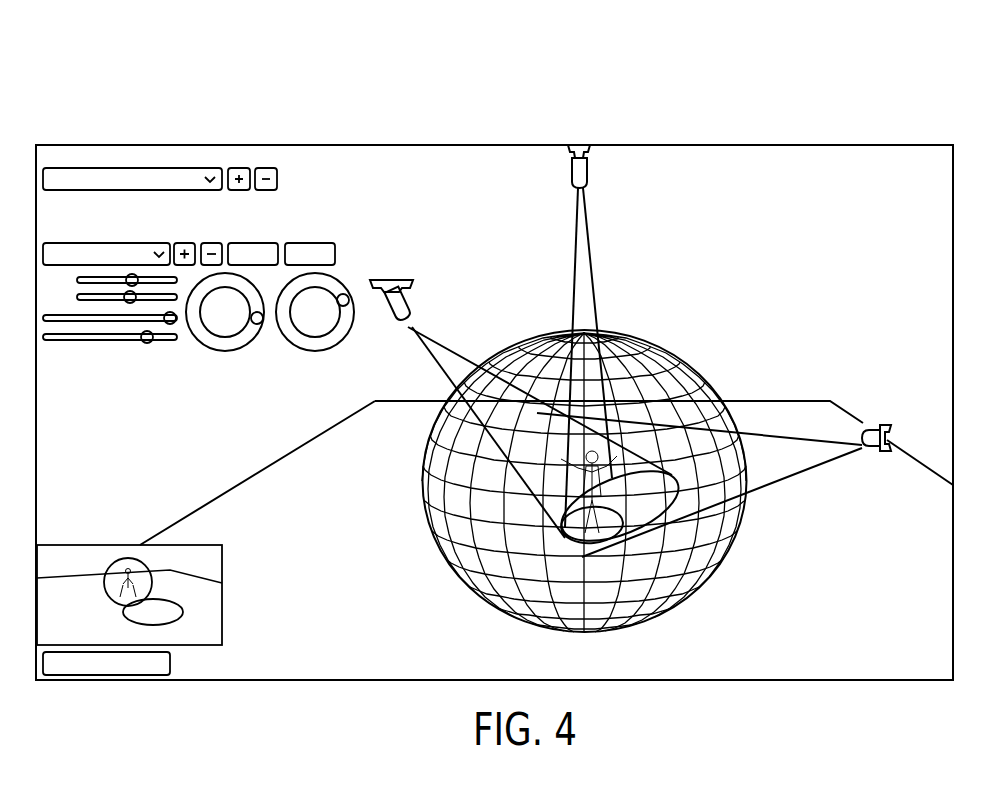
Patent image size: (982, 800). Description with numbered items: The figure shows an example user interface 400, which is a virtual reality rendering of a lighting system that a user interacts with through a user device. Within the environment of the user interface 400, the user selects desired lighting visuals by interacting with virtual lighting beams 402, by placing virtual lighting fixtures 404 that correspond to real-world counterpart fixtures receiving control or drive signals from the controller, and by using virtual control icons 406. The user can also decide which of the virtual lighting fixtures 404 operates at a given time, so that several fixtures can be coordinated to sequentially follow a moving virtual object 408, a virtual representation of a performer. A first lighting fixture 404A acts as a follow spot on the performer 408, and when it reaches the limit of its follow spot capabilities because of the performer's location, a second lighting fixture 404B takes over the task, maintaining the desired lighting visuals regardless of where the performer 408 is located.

The user interface 400 is at (212, 103).
The virtual lighting beams 402 is at (587, 303).
The virtual lighting fixtures 404 is at (583, 140).
The first lighting fixture 404A is at (393, 293).
The second lighting fixture 404B is at (870, 422).
The virtual control icons 406 is at (222, 353).
The moving virtual object 408 is at (617, 540).